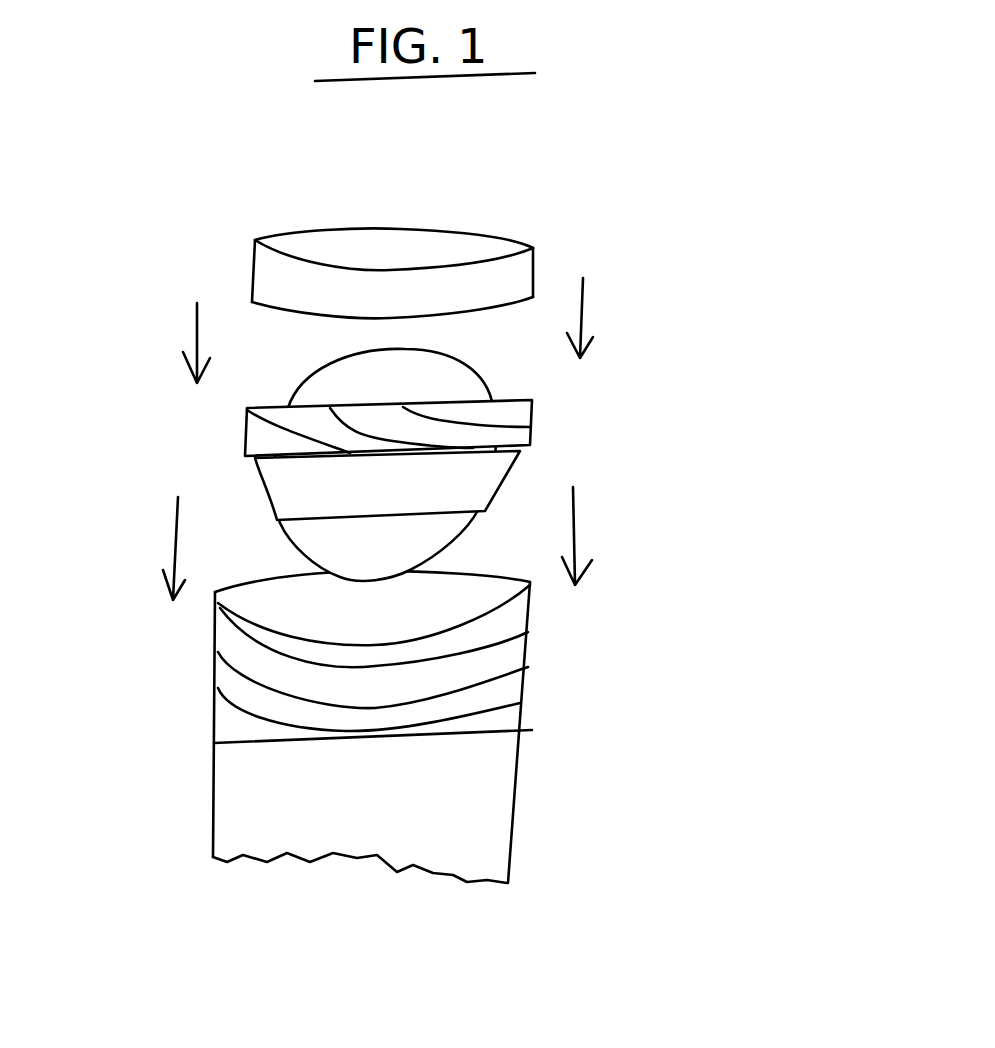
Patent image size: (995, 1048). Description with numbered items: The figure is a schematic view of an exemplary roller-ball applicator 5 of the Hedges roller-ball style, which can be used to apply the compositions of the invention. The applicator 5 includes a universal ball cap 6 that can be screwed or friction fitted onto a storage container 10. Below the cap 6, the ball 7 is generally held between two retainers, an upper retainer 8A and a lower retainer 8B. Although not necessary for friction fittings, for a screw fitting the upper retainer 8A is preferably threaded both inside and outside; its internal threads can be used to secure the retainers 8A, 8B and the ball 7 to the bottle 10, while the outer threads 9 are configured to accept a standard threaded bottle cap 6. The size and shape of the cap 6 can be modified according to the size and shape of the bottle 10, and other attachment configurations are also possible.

The applicator 5 is at (670, 245).
The universal ball cap 6 is at (422, 250).
The ball 7 is at (460, 384).
The upper retainer 8A is at (513, 434).
The retainer 8B is at (474, 486).
The outer threads 9 is at (263, 424).
The storage container 10 is at (487, 837).